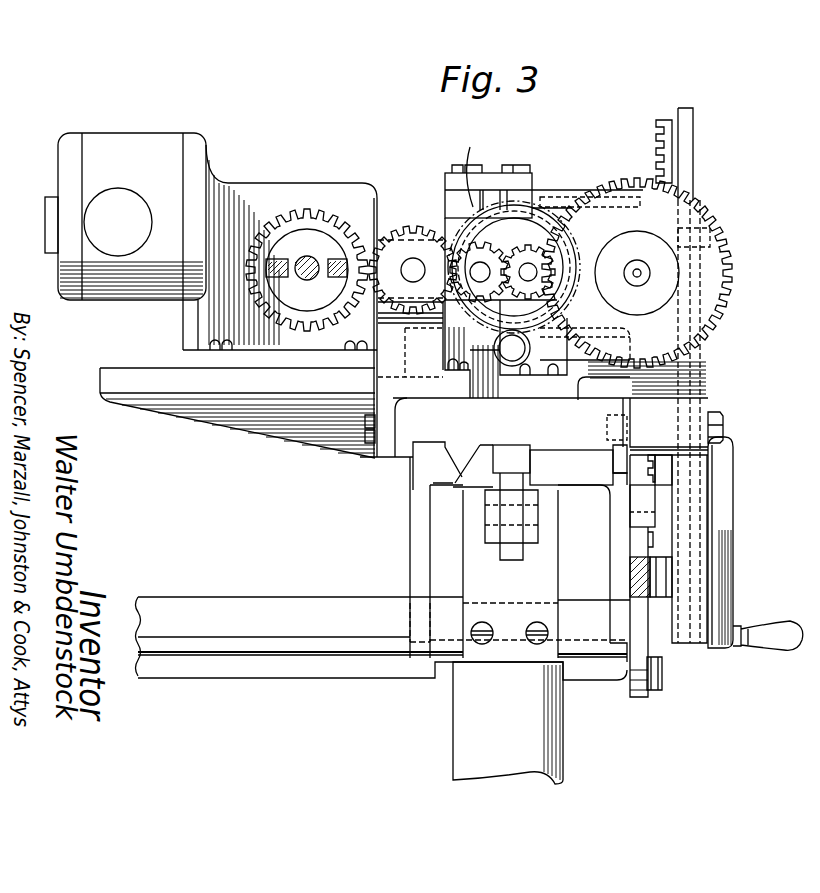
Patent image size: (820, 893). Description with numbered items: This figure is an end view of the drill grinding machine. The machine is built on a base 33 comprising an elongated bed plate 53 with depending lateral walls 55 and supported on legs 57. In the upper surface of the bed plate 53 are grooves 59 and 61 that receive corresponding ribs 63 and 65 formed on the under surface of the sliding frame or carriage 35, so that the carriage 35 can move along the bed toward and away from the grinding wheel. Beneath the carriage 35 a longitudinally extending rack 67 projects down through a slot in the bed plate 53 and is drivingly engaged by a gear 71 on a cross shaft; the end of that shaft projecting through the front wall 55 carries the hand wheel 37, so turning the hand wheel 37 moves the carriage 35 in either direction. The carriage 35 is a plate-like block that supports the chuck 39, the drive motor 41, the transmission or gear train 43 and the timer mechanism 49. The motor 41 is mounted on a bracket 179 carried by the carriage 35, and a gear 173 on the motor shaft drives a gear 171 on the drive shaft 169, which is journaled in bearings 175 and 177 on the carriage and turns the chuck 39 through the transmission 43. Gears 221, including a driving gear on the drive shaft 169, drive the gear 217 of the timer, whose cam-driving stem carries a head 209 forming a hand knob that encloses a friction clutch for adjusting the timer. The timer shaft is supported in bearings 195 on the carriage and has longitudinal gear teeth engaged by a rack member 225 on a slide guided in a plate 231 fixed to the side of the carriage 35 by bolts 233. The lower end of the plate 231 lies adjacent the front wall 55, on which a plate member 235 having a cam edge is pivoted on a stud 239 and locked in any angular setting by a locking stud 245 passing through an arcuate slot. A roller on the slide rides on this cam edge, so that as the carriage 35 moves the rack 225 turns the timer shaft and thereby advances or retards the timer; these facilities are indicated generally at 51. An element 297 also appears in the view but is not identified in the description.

The drive motor 41 is at (116, 143).
The bearing 175 is at (280, 301).
The bracket 179 is at (140, 369).
The gear 173 is at (322, 212).
The gear 171 is at (398, 213).
The drive shaft 169 is at (410, 277).
The transmission 43 is at (427, 206).
The gears 221 is at (497, 308).
The chuck 39 is at (467, 167).
The bearings 195 is at (508, 205).
The bearing 177 is at (507, 245).
The rack member 225 is at (660, 151).
The timer mechanism 49 is at (706, 196).
The head 209 is at (680, 265).
The driving gear 217 is at (733, 296).
The plate 231 is at (708, 376).
The bolts 233 is at (722, 418).
The hand wheel 37 is at (733, 476).
The plate member 235 is at (636, 615).
The stud 239 is at (672, 571).
The locking stud 245 is at (663, 673).
The stop block 297 is at (630, 522).
The timer adjusting facilities 51 is at (645, 536).
The carriage 35 is at (467, 427).
The groove 61 is at (458, 462).
The rib 65 is at (460, 474).
The rack 67 is at (505, 452).
The gear 71 is at (513, 482).
The bed plate 53 is at (571, 467).
The rib 63 is at (614, 465).
The groove 59 is at (617, 478).
The base 33 is at (410, 512).
The lateral walls 55 is at (415, 571).
The legs 57 is at (462, 728).